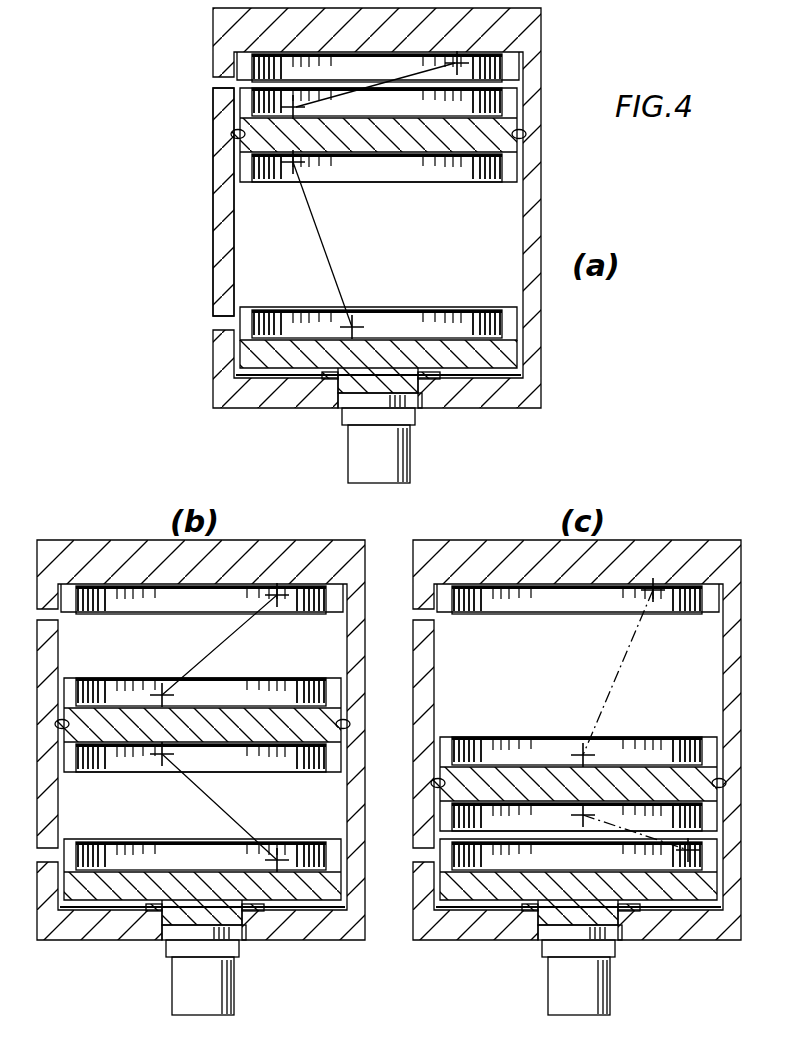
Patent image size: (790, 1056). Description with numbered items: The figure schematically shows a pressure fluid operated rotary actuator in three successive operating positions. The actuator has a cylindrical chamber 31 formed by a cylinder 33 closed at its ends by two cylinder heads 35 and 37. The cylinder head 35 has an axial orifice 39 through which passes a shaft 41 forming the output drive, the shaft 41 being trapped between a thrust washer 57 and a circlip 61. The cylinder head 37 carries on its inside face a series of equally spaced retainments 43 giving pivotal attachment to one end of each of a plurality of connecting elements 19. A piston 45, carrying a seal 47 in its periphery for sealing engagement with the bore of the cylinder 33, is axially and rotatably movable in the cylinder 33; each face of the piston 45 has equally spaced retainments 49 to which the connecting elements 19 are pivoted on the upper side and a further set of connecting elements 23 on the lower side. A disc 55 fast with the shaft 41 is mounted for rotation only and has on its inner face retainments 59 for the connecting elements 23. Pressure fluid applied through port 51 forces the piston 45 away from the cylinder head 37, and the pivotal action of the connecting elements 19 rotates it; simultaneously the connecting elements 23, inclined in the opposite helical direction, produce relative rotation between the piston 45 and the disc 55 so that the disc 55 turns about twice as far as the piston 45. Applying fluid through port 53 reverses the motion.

The connecting elements 19 is at (353, 89).
The connecting elements 23 is at (327, 270).
The cylindrical chamber 31 is at (549, 78).
The cylinder 33 is at (543, 197).
The cylinder head 35 is at (282, 388).
The cylinder head 37 is at (232, 33).
The axial orifice 39 is at (357, 441).
The shaft 41 is at (403, 433).
The retainments 43 is at (448, 68).
The piston 45 is at (401, 140).
The seal 47 is at (512, 136).
The retainments 49 is at (297, 164).
The port 51 is at (237, 86).
The port 53 is at (210, 322).
The disc 55 is at (443, 347).
The thrust washer 57 is at (428, 382).
The retainments 59 is at (357, 320).
The circlip 61 is at (420, 410).